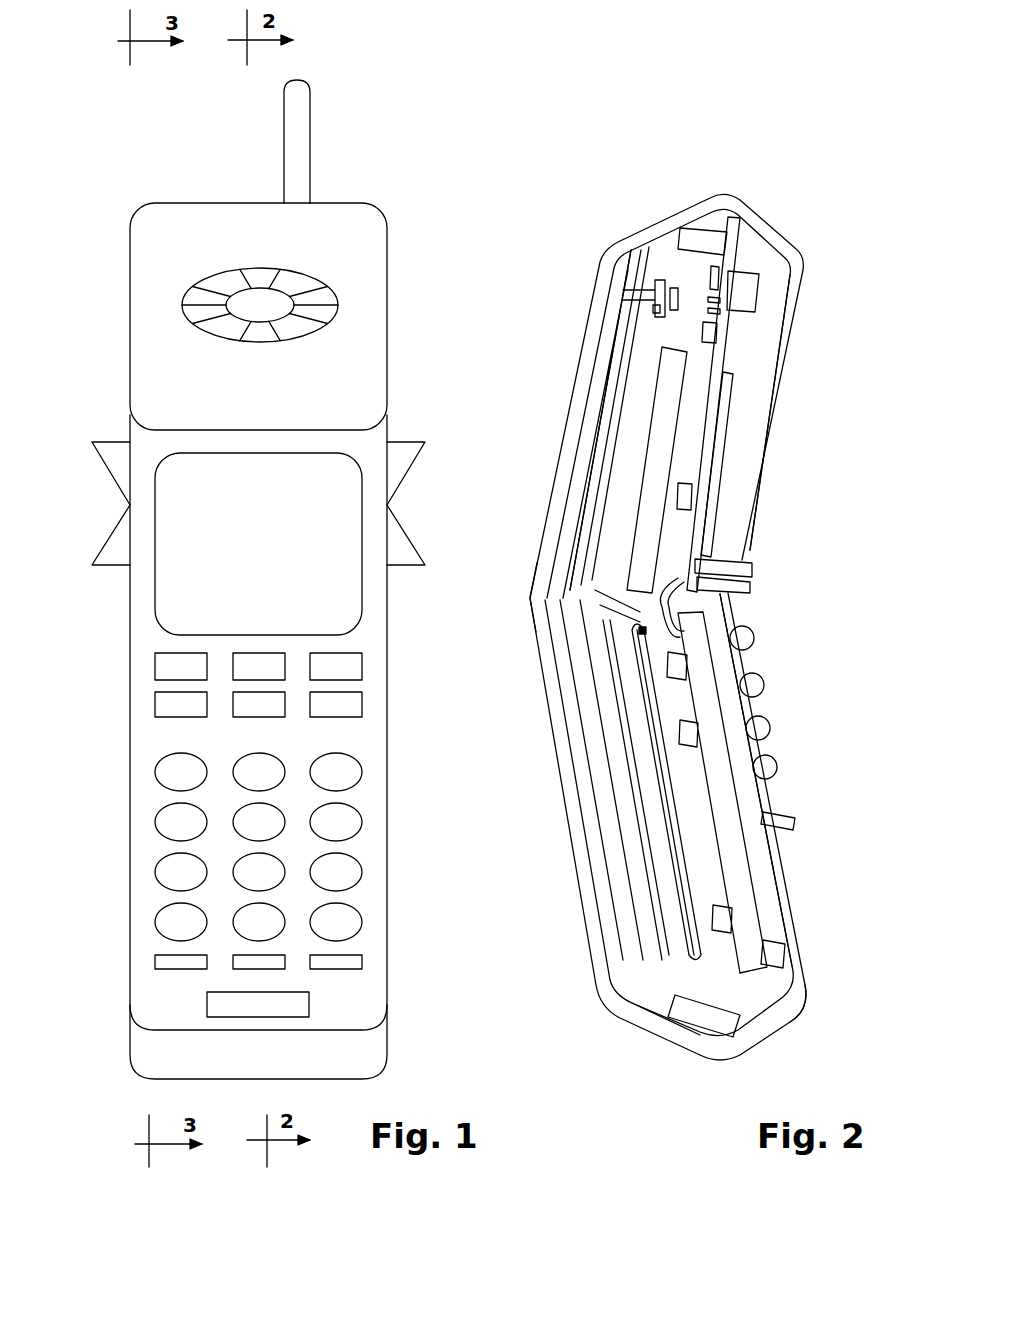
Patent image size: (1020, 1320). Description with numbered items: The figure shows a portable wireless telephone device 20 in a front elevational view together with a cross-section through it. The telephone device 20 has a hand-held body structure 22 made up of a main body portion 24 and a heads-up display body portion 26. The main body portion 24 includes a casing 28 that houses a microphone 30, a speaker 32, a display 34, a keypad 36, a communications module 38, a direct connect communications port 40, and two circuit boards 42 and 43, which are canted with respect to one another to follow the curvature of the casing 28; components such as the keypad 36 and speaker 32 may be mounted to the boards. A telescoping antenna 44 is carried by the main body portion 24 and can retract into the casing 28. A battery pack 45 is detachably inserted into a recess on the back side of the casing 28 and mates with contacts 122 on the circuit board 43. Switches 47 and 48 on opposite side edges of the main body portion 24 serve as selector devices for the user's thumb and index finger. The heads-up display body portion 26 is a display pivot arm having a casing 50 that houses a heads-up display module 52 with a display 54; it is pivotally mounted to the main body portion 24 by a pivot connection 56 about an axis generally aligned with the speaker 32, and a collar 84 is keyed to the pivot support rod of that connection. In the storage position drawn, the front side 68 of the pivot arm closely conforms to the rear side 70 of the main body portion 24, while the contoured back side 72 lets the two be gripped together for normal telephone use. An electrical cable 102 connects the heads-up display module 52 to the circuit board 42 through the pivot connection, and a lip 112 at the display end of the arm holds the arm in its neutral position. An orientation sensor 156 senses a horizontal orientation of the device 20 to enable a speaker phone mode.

In FIG. 1, the telephone device 20 is at (105, 205).
In FIG. 2, the telephone device 20 is at (590, 170).
In FIG. 1, the hand-held body structure 22 is at (115, 876).
In FIG. 2, the hand-held body structure 22 is at (786, 208).
In FIG. 2, the main body portion 24 is at (803, 963).
In FIG. 2, the heads-up display body portion 26 is at (572, 330).
In FIG. 2, the casing 28 is at (755, 528).
In FIG. 1, the microphone 30 is at (207, 1005).
In FIG. 2, the microphone 30 is at (785, 947).
In FIG. 1, the speaker 32 is at (282, 293).
In FIG. 2, the speaker 32 is at (760, 287).
In FIG. 1, the display 34 is at (158, 592).
In FIG. 2, the display 34 is at (712, 475).
In FIG. 1, the keypad 36 is at (368, 740).
In FIG. 2, the keypad 36 is at (805, 725).
In FIG. 2, the communications module 38 is at (638, 508).
In FIG. 2, the direct connect communications port 40 is at (705, 228).
In FIG. 2, the circuit board 42 is at (723, 357).
In FIG. 2, the circuit board 43 is at (740, 855).
In FIG. 1, the telescoping antenna 44 is at (310, 100).
In FIG. 2, the battery pack 45 is at (647, 833).
In FIG. 1, the switch 47 is at (95, 447).
In FIG. 1, the switch 48 is at (425, 442).
In FIG. 2, the casing 50 is at (563, 785).
In FIG. 2, the heads-up display module 52 is at (665, 1025).
In FIG. 2, the display 54 is at (753, 1035).
In FIG. 2, the pivot connection 56 is at (625, 286).
In FIG. 2, the front side 68 is at (627, 417).
In FIG. 2, the rear side 70 is at (608, 610).
In FIG. 2, the back side 72 is at (538, 563).
In FIG. 2, the collar 84 is at (662, 300).
In FIG. 2, the electrical cable 102 is at (603, 370).
In FIG. 2, the lip 112 is at (807, 993).
In FIG. 2, the contacts 122 is at (640, 632).
In FIG. 2, the orientation sensor 156 is at (670, 658).